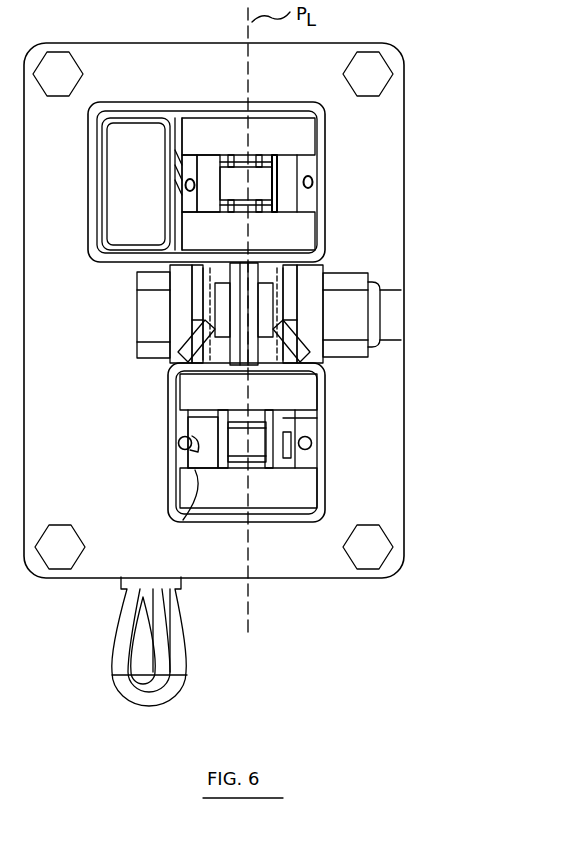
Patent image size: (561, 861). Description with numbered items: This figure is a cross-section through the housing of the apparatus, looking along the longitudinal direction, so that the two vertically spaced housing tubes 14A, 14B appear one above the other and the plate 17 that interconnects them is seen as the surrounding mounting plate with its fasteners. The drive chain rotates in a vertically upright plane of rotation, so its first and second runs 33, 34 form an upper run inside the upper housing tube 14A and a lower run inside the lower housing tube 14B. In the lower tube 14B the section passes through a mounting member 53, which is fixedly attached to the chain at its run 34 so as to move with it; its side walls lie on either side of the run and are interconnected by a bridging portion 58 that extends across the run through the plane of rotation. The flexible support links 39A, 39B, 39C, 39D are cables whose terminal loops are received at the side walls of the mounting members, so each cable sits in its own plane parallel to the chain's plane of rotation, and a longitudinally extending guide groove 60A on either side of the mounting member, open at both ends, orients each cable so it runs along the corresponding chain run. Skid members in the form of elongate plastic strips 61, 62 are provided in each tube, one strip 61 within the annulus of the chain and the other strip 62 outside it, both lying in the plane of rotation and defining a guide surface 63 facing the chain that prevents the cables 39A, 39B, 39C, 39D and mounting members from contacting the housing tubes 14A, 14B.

The housing tube 14A is at (150, 106).
The housing tube 14B is at (287, 522).
The plate 17 is at (403, 365).
The first run 33 is at (280, 195).
The second run 34 is at (275, 422).
The flexible support link 39A is at (172, 445).
The flexible support link 39B is at (318, 447).
The flexible support link 39C is at (178, 189).
The flexible support link 39D is at (320, 186).
The mounting member 53 is at (183, 520).
The bridging portion 58 is at (245, 418).
The guide groove 60A is at (198, 450).
The skid member strip 61 is at (303, 392).
The skid member strip 62 is at (298, 492).
The guide surface 63 is at (297, 412).